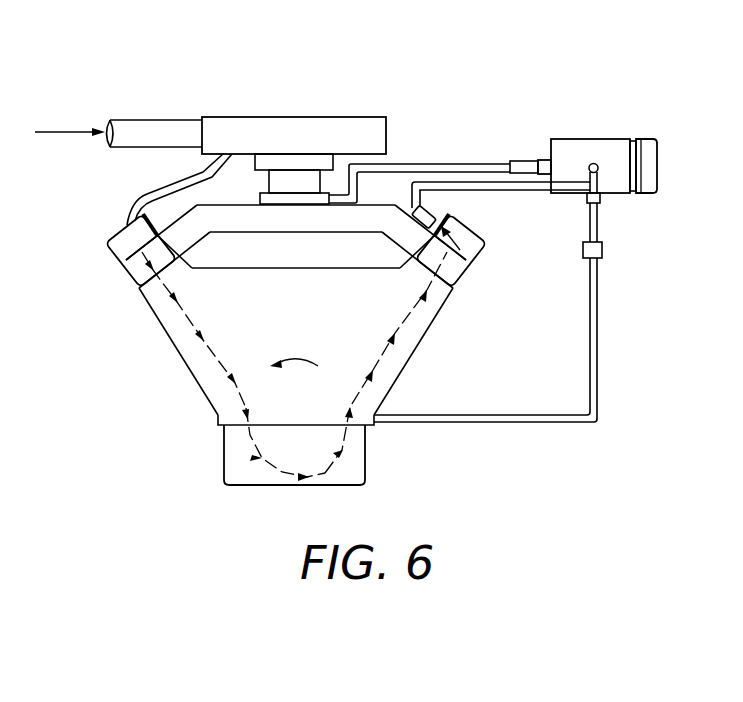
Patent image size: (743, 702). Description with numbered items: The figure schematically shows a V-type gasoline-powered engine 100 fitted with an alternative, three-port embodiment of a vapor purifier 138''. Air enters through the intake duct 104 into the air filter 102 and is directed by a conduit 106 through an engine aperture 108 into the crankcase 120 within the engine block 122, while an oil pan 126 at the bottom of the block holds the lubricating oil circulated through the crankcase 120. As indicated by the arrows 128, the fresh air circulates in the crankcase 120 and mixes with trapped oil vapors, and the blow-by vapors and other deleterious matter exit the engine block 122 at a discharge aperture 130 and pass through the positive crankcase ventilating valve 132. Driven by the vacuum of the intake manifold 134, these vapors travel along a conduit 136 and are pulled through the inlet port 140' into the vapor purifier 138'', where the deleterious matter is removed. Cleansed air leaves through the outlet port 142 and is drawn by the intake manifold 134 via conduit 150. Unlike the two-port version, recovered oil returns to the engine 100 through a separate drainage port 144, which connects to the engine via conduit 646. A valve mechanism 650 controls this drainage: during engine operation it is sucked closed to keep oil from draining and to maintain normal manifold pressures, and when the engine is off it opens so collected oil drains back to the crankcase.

The V-type gasoline-powered engine 100 is at (176, 435).
The air filter 102 is at (301, 124).
The intake duct 104 is at (162, 128).
The conduit 106 is at (157, 197).
The engine aperture 108 is at (118, 250).
The crankcase 120 is at (314, 318).
The engine block 122 is at (171, 334).
The oil pan 126 is at (367, 453).
The arrows 128 is at (388, 357).
The discharge aperture 130 is at (482, 252).
The positive crankcase ventilating (PCV) valve 132 is at (437, 196).
The intake manifold 134 is at (314, 258).
The conduit 136 is at (498, 189).
The vapor purifier 138'' is at (644, 122).
The inlet port 140' is at (604, 122).
The outlet port 142 is at (542, 160).
The drainage port 144 is at (602, 198).
The conduit 150 is at (500, 163).
The conduit 646 is at (598, 305).
The valve mechanism 650 is at (603, 248).